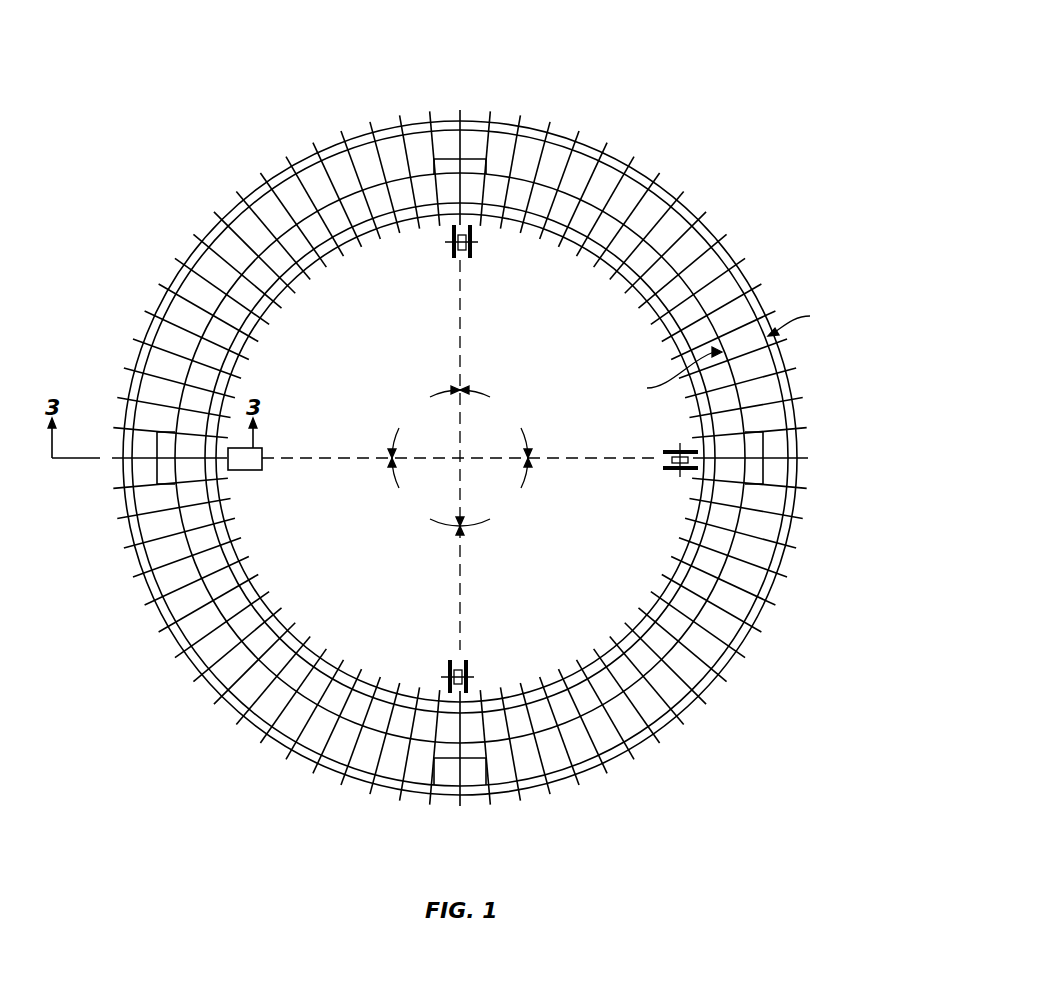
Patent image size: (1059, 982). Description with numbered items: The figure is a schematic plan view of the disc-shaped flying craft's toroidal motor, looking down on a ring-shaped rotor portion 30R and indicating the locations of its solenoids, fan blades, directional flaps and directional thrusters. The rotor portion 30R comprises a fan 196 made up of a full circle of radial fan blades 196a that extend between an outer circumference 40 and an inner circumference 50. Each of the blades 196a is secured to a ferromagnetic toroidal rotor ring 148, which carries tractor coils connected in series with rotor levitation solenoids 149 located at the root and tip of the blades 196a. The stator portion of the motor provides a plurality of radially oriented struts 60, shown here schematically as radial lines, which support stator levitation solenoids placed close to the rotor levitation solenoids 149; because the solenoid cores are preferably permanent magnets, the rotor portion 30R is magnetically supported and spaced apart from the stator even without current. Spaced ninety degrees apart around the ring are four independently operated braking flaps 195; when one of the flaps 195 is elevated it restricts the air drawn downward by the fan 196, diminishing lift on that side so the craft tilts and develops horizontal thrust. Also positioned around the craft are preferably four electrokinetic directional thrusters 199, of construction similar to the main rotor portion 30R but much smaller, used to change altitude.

The rotor portion 30R is at (650, 50).
The outer circumference 40 is at (804, 320).
The inner circumference 50 is at (670, 376).
The struts 60 is at (373, 127).
The ferromagnetic toroidal rotor ring 148 is at (222, 338).
The rotor levitation solenoids 149 is at (262, 207).
The braking flaps 195 is at (489, 128).
The fan 196 is at (628, 203).
The radial fan blades 196a is at (287, 720).
The electrokinetic directional thrusters 199 is at (475, 248).